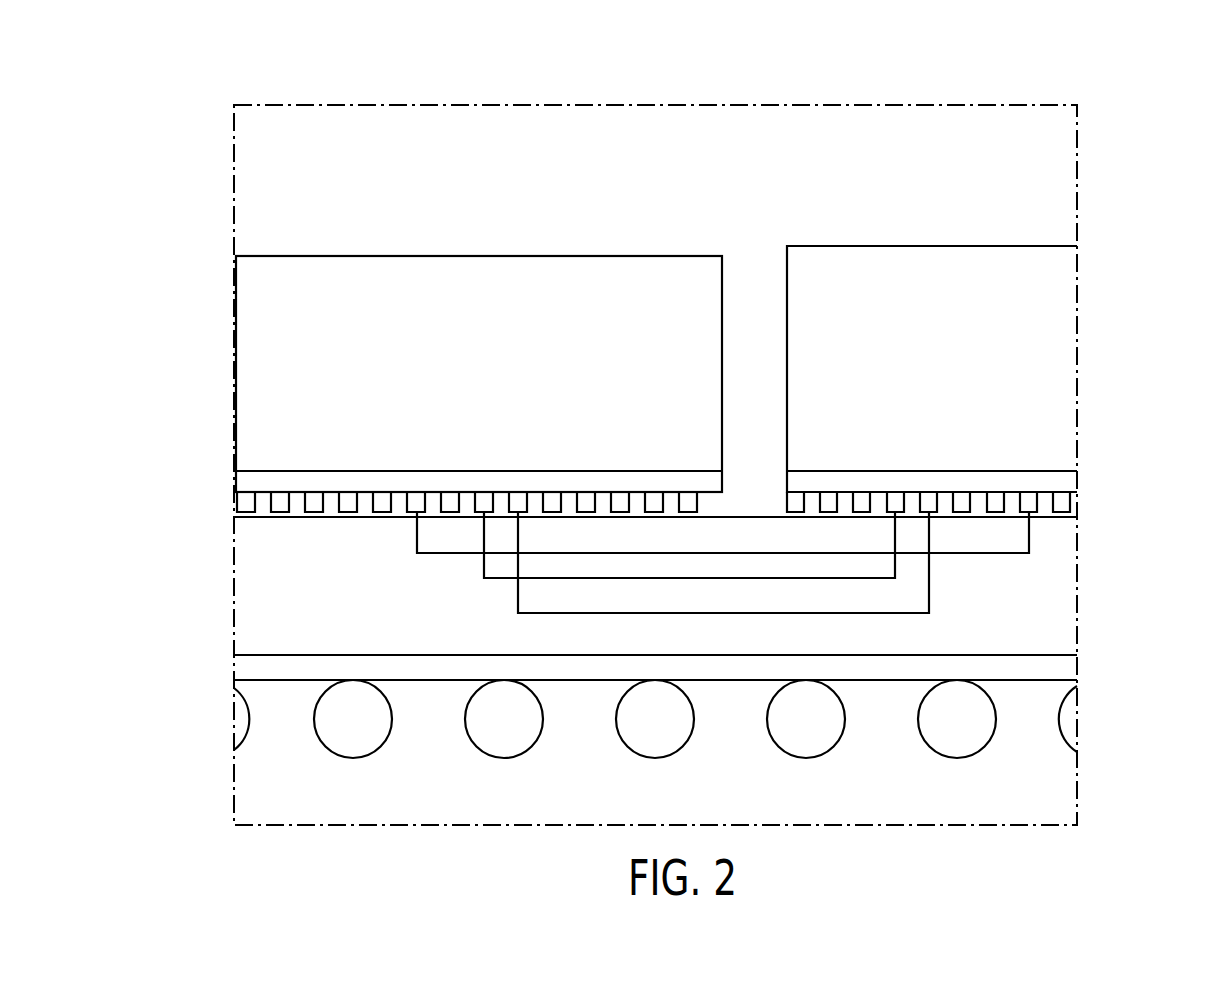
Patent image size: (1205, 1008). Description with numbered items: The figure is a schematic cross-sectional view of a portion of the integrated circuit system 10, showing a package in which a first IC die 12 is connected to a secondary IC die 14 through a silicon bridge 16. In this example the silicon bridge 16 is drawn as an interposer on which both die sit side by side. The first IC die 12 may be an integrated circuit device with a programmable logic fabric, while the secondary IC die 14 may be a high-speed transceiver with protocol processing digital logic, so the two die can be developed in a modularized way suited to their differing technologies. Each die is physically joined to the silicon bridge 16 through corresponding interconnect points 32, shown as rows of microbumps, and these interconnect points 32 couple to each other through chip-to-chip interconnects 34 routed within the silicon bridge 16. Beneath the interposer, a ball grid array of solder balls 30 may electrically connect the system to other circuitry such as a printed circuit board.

The integrated circuit system 10 is at (228, 59).
The first integrated circuit die 12 is at (477, 256).
The secondary integrated circuit die 14 is at (931, 246).
The silicon bridge 16 is at (270, 571).
The solder balls 30 is at (306, 757).
The interconnect points 32 is at (220, 495).
The chip-to-chip interconnects 34 is at (727, 617).